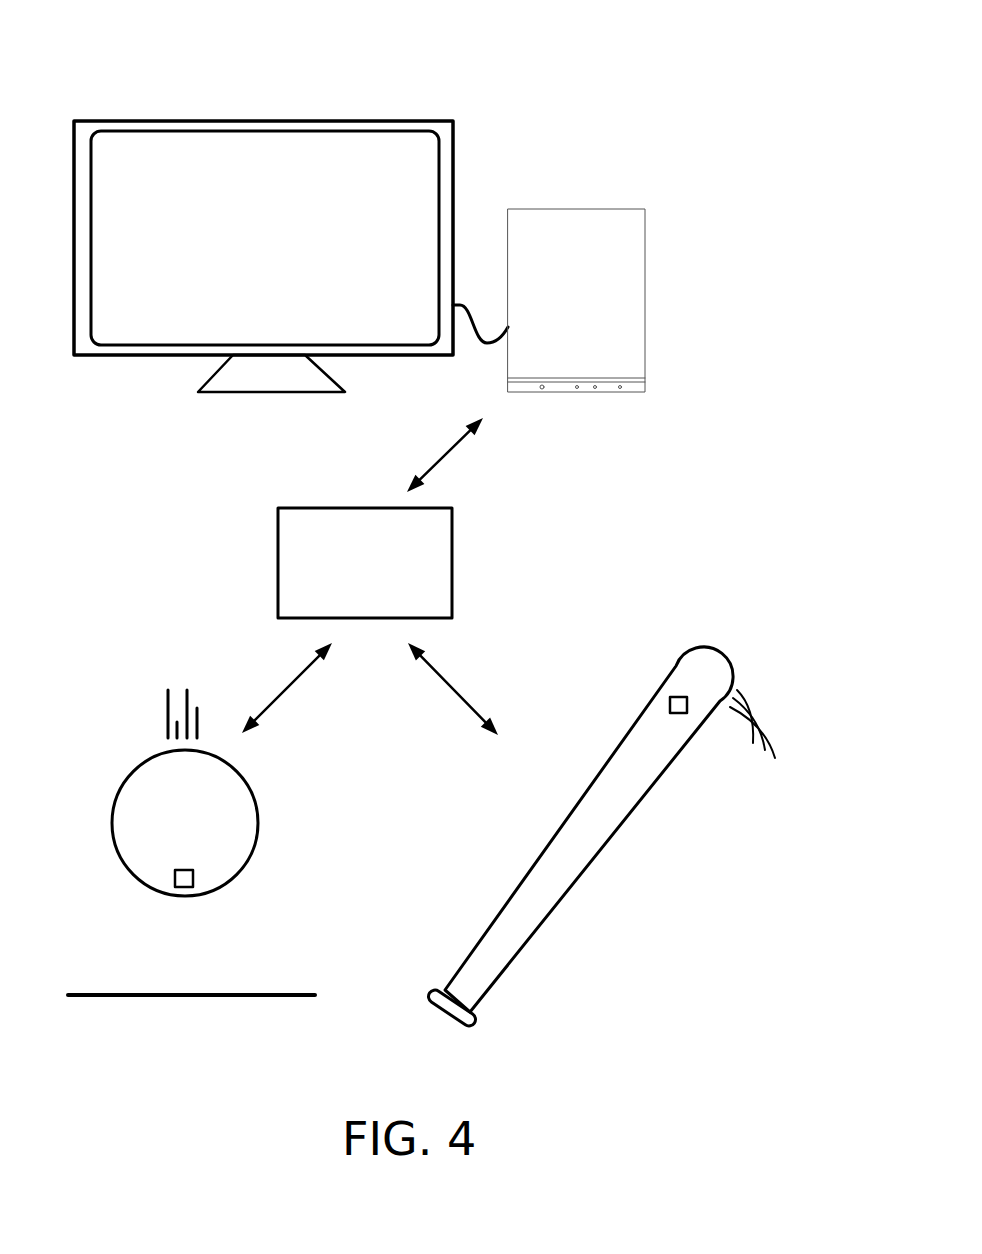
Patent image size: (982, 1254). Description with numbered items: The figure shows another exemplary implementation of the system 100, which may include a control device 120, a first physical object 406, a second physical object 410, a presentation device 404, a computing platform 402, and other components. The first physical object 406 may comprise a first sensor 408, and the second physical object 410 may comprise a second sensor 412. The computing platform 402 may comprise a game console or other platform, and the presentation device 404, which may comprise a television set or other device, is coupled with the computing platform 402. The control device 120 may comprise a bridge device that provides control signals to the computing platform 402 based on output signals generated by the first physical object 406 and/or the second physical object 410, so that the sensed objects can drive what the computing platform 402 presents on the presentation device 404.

The system 100 is at (653, 69).
The control device 120 is at (448, 577).
The computing platform 402 is at (640, 307).
The presentation device 404 is at (283, 127).
The first physical object 406 is at (717, 667).
The first sensor 408 is at (670, 705).
The second physical object 410 is at (252, 793).
The second sensor 412 is at (175, 887).